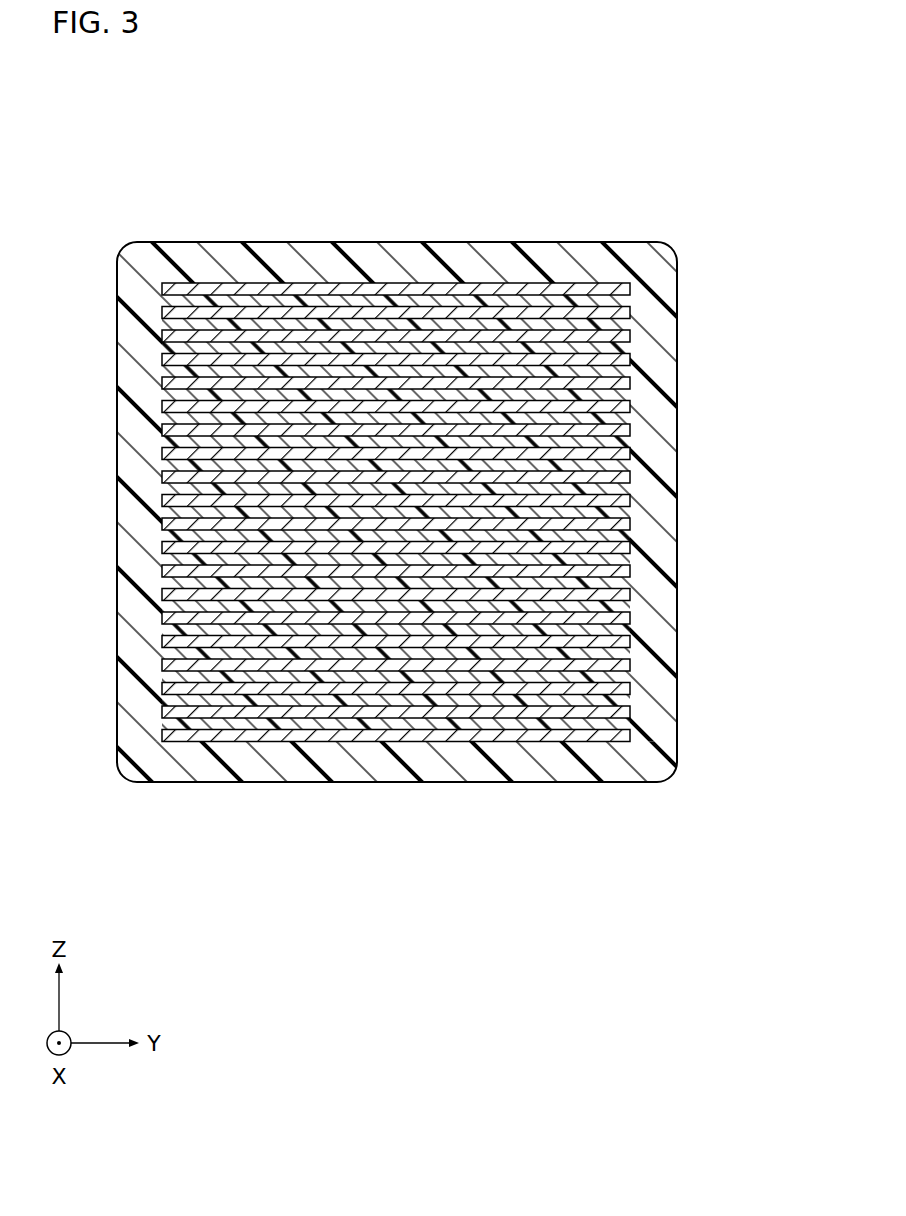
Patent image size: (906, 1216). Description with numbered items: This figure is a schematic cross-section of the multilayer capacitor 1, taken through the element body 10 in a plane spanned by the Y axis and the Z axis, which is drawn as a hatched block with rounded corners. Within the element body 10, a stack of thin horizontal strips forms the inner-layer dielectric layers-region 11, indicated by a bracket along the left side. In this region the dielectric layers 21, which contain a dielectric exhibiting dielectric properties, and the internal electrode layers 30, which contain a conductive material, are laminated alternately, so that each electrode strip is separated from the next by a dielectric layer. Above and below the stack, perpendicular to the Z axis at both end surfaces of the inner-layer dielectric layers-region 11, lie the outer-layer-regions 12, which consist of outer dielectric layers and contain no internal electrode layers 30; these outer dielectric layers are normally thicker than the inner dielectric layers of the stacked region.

The multilayer capacitor 1 is at (626, 210).
The element body 10 is at (543, 241).
The inner-layer dielectric layers-region 11 is at (411, 499).
The outer-layer-regions 12 is at (412, 241).
The dielectric layers 21 is at (630, 312).
The internal electrode layers 30 is at (630, 290).